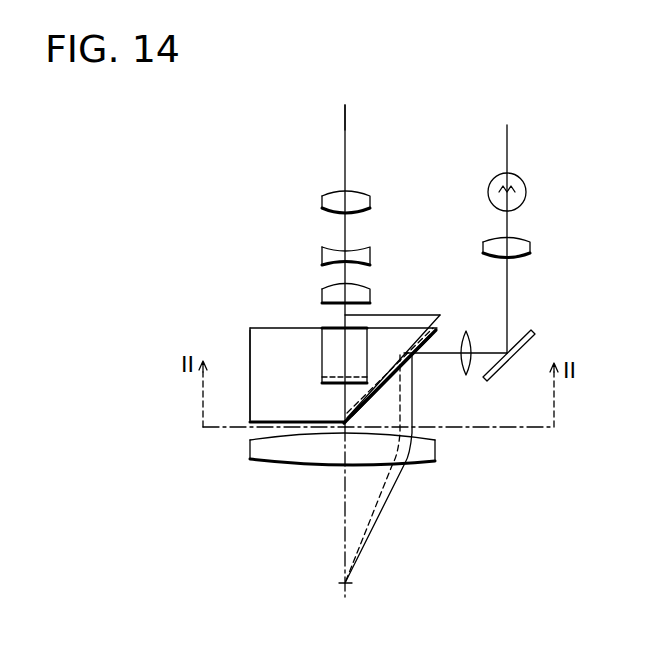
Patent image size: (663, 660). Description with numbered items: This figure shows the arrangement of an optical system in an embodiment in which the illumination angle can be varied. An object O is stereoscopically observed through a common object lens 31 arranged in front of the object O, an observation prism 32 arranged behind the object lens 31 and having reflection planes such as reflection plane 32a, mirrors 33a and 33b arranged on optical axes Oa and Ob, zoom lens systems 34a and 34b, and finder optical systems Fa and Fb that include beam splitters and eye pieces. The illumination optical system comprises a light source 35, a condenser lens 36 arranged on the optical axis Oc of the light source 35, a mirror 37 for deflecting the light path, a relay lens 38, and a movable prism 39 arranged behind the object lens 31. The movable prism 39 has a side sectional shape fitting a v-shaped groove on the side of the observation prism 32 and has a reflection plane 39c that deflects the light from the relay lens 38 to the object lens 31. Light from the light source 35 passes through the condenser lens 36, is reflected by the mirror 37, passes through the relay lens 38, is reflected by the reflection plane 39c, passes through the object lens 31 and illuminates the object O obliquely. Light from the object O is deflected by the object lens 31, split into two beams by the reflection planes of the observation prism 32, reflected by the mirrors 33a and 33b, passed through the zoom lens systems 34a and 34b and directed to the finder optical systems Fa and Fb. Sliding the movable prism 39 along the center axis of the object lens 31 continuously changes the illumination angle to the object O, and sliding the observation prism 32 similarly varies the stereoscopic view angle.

The object lens 31 is at (250, 452).
The observation prism 32 is at (260, 342).
The reflection plane 32a is at (250, 335).
The mirror 33a is at (291, 335).
The mirror 33b is at (322, 342).
The zoom lens system 34a is at (294, 248).
The zoom lens system 34b is at (318, 195).
The light source 35 is at (524, 186).
The condenser lens 36 is at (531, 247).
The mirror 37 is at (535, 333).
The relay lens 38 is at (464, 331).
The movable prism 39 is at (410, 315).
The reflection plane 39c is at (377, 390).
The object O is at (352, 583).
The optical axis Oa is at (399, 351).
The optical axis Ob is at (345, 127).
The optical axis Oc is at (507, 135).
The finder optical system Fa is at (342, 104).
The finder optical system Fb is at (342, 104).